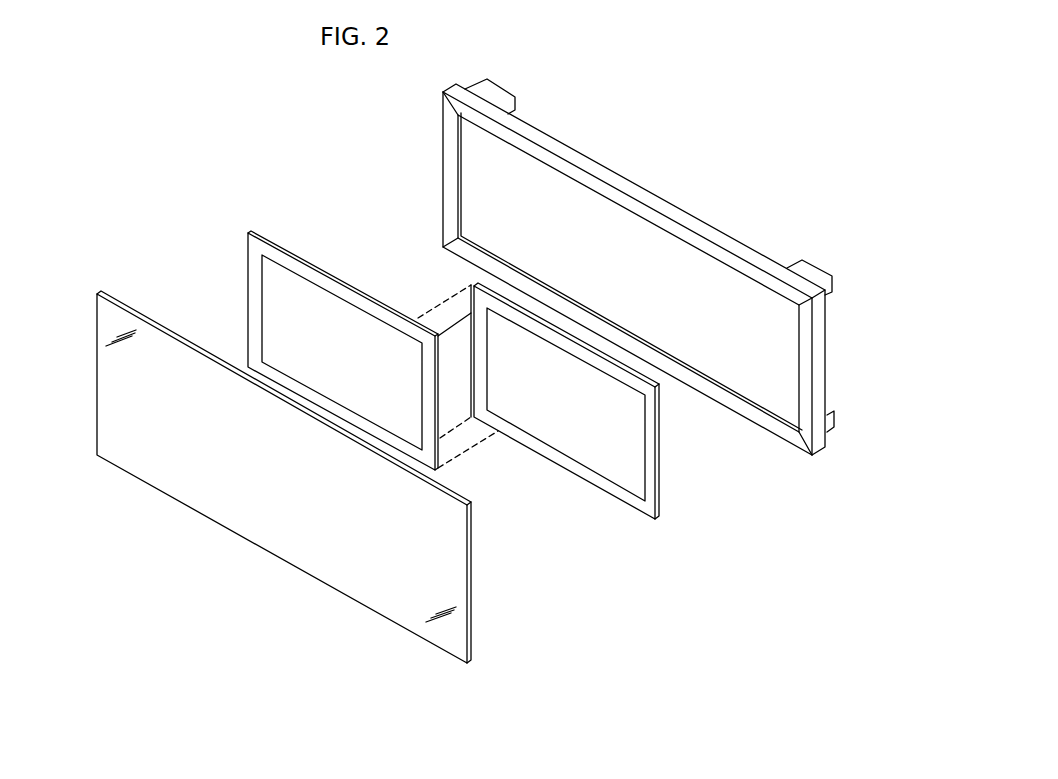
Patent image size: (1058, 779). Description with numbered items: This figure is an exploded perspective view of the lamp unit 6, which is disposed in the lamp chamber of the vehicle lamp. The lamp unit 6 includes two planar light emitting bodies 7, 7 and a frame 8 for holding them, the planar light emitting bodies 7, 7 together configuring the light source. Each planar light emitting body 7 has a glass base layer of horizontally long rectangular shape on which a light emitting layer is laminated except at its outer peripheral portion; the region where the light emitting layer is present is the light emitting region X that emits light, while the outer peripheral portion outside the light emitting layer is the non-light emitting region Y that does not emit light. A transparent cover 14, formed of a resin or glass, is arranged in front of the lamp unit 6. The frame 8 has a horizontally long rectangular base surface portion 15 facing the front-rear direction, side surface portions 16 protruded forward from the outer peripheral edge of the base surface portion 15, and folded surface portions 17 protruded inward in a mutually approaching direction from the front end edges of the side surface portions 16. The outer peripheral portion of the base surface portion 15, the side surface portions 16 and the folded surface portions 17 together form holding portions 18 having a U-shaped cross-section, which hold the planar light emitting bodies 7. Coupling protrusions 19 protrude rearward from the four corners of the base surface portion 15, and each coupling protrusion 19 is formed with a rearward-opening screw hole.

The lamp unit 6 is at (174, 181).
The planar light emitting body 7 is at (259, 237).
The frame 8 is at (673, 143).
The transparent cover 14 is at (230, 487).
The base surface portion 15 is at (697, 272).
The side surface portion 16 is at (652, 205).
The folded surface portion 17 is at (548, 158).
The holding portion 18 is at (597, 168).
The coupling protrusion 19 is at (490, 90).
The light emitting region X is at (327, 312).
The non-light emitting region Y is at (256, 290).